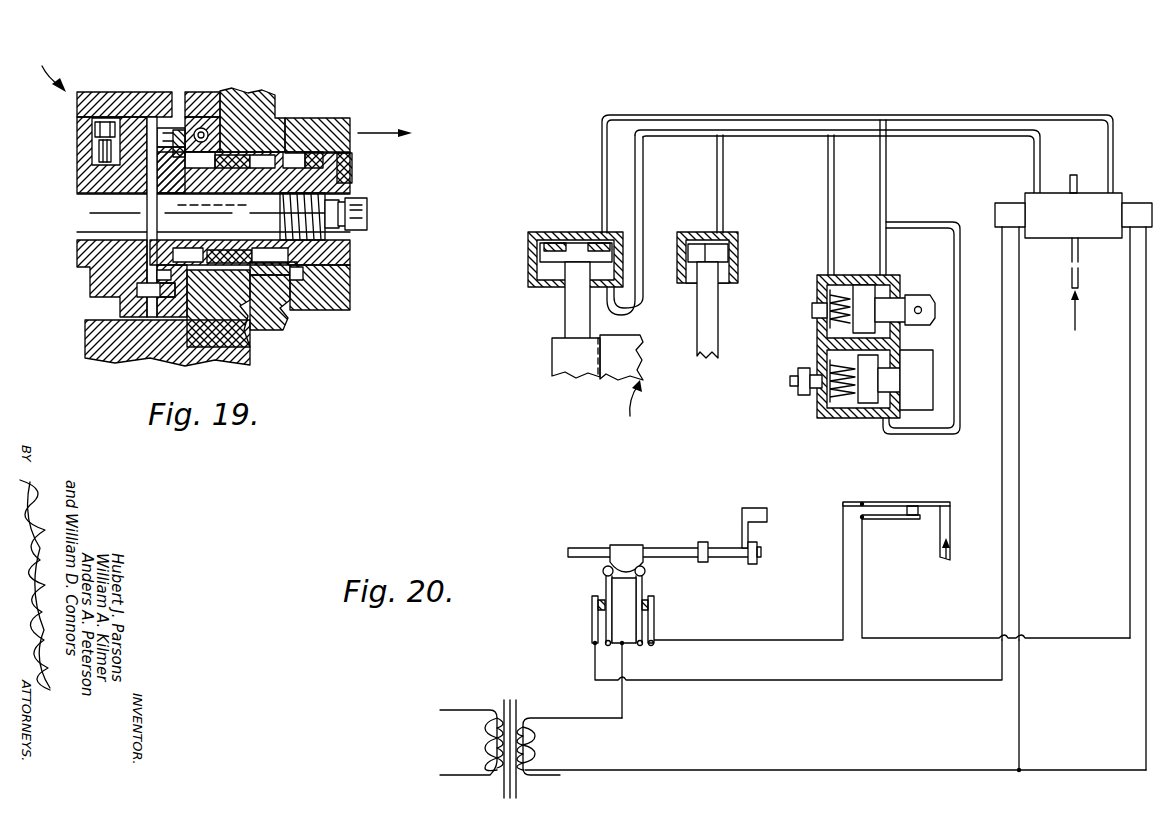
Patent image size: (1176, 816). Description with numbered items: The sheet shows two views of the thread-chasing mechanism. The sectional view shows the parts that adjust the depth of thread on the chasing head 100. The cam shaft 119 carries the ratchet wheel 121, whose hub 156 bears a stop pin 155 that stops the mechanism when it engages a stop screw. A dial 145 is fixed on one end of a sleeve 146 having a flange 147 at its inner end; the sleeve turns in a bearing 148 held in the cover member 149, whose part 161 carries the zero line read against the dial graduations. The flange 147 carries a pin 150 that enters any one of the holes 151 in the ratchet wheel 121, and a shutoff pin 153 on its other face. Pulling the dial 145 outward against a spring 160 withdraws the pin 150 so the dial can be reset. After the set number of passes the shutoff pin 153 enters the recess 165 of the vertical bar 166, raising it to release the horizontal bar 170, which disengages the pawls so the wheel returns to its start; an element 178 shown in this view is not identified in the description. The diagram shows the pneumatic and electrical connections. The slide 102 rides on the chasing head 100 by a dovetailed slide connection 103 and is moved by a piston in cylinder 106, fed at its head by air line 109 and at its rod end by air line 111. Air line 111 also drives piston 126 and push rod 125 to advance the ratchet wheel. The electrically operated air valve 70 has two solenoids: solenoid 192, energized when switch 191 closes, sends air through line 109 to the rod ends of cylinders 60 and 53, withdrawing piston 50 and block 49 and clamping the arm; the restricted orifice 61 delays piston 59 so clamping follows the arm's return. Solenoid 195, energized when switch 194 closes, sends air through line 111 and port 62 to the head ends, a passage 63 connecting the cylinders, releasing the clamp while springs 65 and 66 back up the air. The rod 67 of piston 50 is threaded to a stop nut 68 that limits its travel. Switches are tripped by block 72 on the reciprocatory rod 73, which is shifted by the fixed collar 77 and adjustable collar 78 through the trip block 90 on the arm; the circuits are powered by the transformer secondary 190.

In FIG. 19, the chasing head 100 is at (39, 69).
In FIG. 20, the chasing head 100 is at (634, 401).
In FIG. 19, the shaft 119 is at (84, 212).
In FIG. 19, the ratchet wheel 121 is at (130, 125).
In FIG. 19, the dial 145 is at (312, 120).
In FIG. 19, the sleeve 146 is at (352, 250).
In FIG. 19, the flange 147 is at (142, 362).
In FIG. 19, the bearing 148 is at (262, 325).
In FIG. 19, the cover member 149 is at (250, 330).
In FIG. 19, the pin 150 is at (160, 276).
In FIG. 19, the holes 151 is at (138, 290).
In FIG. 19, the shutoff pin 153 is at (176, 128).
In FIG. 19, the stop pin 155 is at (96, 128).
In FIG. 19, the hub 156 is at (96, 150).
In FIG. 19, the spring 160 is at (368, 212).
In FIG. 19, the part of cover member 161 is at (272, 116).
In FIG. 19, the horizontal bar 170 is at (203, 127).
In FIG. 19, the housing portion 178 is at (226, 112).
In FIG. 20, the air conduit 109 is at (602, 166).
In FIG. 20, the air conduit 111 is at (643, 184).
In FIG. 20, the port 62 is at (828, 170).
In FIG. 20, the cylinder 106 is at (537, 272).
In FIG. 20, the slide 102 is at (552, 352).
In FIG. 20, the dovetailed slide connection 103 is at (600, 378).
In FIG. 20, the piston 126 is at (735, 256).
In FIG. 20, the push rod 125 is at (713, 299).
In FIG. 20, the passage 63 is at (818, 340).
In FIG. 20, the cylinder 60 is at (824, 290).
In FIG. 20, the piston 59 is at (852, 282).
In FIG. 20, the restricted orifice 61 is at (900, 296).
In FIG. 20, the spring 65 is at (818, 330).
In FIG. 20, the spring 66 is at (824, 360).
In FIG. 20, the piston 50 is at (870, 410).
In FIG. 20, the cylinder 53 is at (822, 408).
In FIG. 20, the block 49 is at (925, 396).
In FIG. 20, the stop nut 68 is at (798, 376).
In FIG. 20, the rod 67 is at (790, 382).
In FIG. 20, the electrically operated air valve 70 is at (1040, 236).
In FIG. 20, the solenoid 195 is at (1008, 203).
In FIG. 20, the solenoid 192 is at (1142, 203).
In FIG. 20, the recess 165 is at (930, 478).
In FIG. 20, the vertical bar 166 is at (946, 560).
In FIG. 20, the block 72 is at (624, 546).
In FIG. 20, the reciprocatory rod 73 is at (722, 557).
In FIG. 20, the collar 78 is at (702, 542).
In FIG. 20, the trip block 90 is at (757, 508).
In FIG. 20, the collar 77 is at (754, 564).
In FIG. 20, the switch 194 is at (592, 605).
In FIG. 20, the switch 191 is at (660, 609).
In FIG. 20, the transformer secondary 190 is at (545, 750).